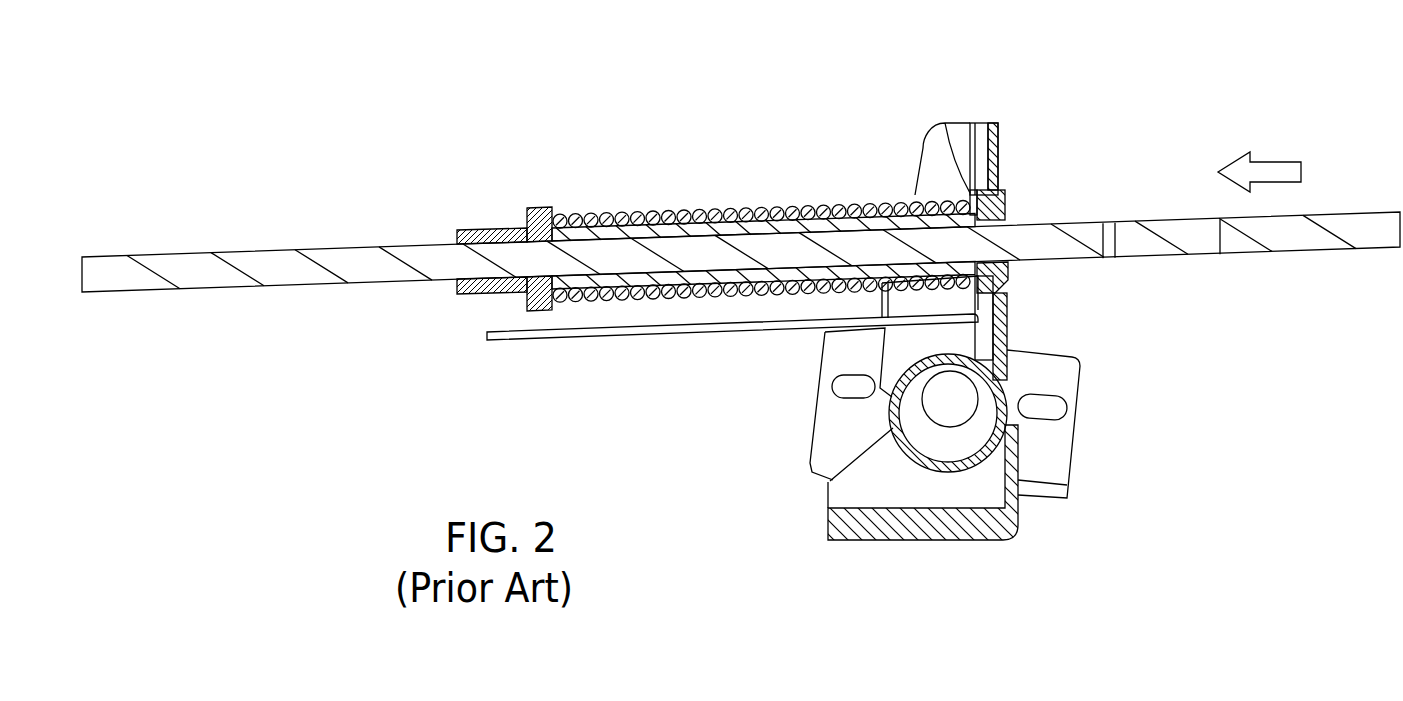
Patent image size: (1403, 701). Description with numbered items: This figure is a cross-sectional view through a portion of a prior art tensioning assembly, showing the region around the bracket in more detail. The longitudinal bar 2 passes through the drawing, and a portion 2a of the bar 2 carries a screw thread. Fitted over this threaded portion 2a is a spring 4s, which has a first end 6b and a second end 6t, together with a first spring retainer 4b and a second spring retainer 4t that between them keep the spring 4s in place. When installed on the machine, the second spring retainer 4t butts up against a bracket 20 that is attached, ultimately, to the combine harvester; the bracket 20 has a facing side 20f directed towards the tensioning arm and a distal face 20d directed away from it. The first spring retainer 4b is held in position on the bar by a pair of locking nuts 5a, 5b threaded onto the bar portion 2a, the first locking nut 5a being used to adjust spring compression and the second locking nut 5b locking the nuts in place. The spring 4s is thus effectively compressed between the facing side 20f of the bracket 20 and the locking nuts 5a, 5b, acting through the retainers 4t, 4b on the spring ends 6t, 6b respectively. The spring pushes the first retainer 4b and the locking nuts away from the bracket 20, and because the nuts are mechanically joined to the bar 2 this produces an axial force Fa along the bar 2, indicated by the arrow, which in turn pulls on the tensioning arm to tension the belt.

The longitudinal bar 2 is at (1310, 253).
The threaded portion of the bar 2a is at (258, 265).
The spring 4s is at (745, 207).
The first spring retainer 4b is at (545, 210).
The second spring retainer 4t is at (970, 193).
The first locking nut 5a is at (500, 222).
The second locking nut 5b is at (458, 231).
The first end of the spring 6b is at (575, 214).
The second end of the spring 6t is at (930, 193).
The bracket 20 is at (1005, 307).
The distal face of the bracket 20d is at (977, 123).
The facing side of the bracket 20f is at (1000, 153).
The axial force Fa is at (1259, 160).